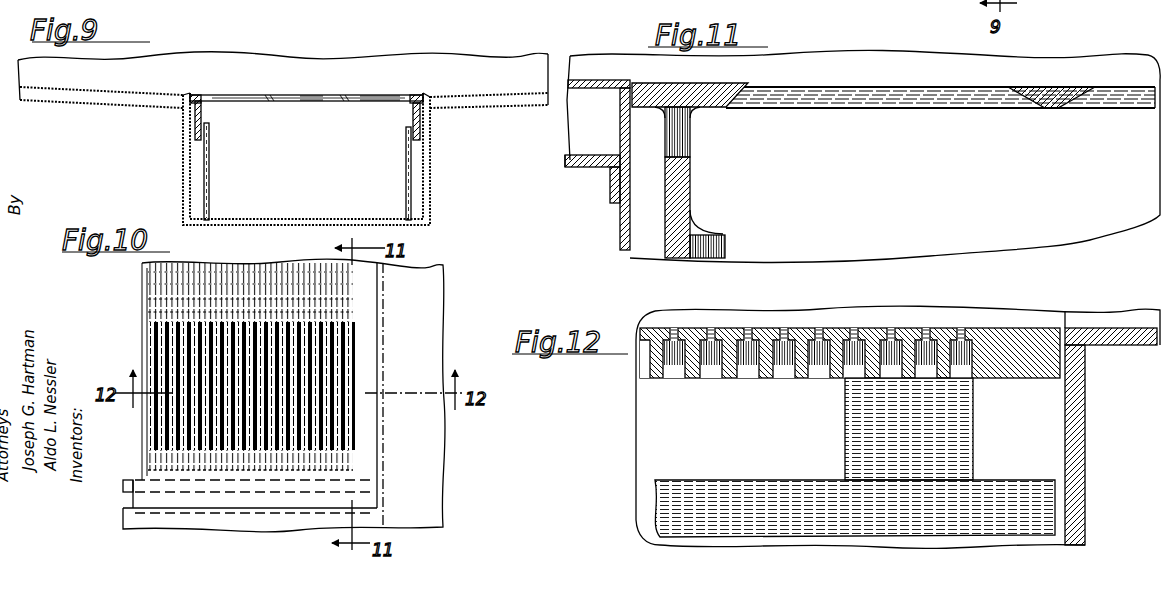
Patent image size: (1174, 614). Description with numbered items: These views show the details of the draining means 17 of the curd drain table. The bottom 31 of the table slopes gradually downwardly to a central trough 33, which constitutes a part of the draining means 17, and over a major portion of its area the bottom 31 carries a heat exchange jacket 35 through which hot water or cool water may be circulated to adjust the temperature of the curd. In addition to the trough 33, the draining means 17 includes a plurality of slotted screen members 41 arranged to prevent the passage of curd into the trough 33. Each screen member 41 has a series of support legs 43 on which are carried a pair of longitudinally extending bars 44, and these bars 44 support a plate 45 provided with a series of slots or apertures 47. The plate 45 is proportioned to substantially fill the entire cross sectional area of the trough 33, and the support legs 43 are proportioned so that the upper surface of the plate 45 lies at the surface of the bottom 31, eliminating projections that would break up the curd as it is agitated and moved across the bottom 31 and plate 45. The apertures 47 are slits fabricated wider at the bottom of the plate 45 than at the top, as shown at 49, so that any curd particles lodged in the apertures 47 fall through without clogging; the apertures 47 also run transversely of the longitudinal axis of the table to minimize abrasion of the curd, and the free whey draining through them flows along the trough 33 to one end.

In FIG. 9, the draining means 17 is at (379, 93).
In FIG. 11, the draining means 17 is at (940, 84).
In FIG. 12, the draining means 17 is at (986, 331).
In FIG. 9, the bottom 31 is at (100, 93).
In FIG. 10, the bottom 31 is at (430, 320).
In FIG. 11, the bottom 31 is at (592, 90).
In FIG. 12, the bottom 31 is at (1121, 346).
In FIG. 9, the central trough 33 is at (268, 224).
In FIG. 11, the central trough 33 is at (614, 201).
In FIG. 12, the central trough 33 is at (1086, 441).
In FIG. 9, the heat exchange jacket 35 is at (121, 105).
In FIG. 11, the heat exchange jacket 35 is at (572, 164).
In FIG. 9, the slotted screen members 41 is at (314, 93).
In FIG. 10, the slotted screen members 41 is at (160, 305).
In FIG. 11, the slotted screen members 41 is at (820, 84).
In FIG. 12, the slotted screen members 41 is at (871, 331).
In FIG. 9, the support legs 43 is at (208, 157).
In FIG. 11, the support legs 43 is at (722, 235).
In FIG. 9, the longitudinally extending bars 44 is at (202, 120).
In FIG. 10, the longitudinally extending bars 44 is at (126, 481).
In FIG. 11, the longitudinally extending bars 44 is at (692, 179).
In FIG. 12, the longitudinally extending bars 44 is at (778, 482).
In FIG. 9, the plate 45 is at (198, 94).
In FIG. 10, the plate 45 is at (160, 350).
In FIG. 11, the plate 45 is at (706, 86).
In FIG. 12, the plate 45 is at (1031, 380).
In FIG. 9, the slots or apertures 47 is at (250, 95).
In FIG. 10, the slots or apertures 47 is at (207, 312).
In FIG. 11, the slots or apertures 47 is at (848, 92).
In FIG. 12, the slots or apertures 47 is at (747, 333).
In FIG. 9, the widened bottom of aperture 49 is at (297, 101).
In FIG. 10, the widened bottom of aperture 49 is at (355, 462).
In FIG. 11, the widened bottom of aperture 49 is at (740, 106).
In FIG. 12, the widened bottom of aperture 49 is at (822, 380).